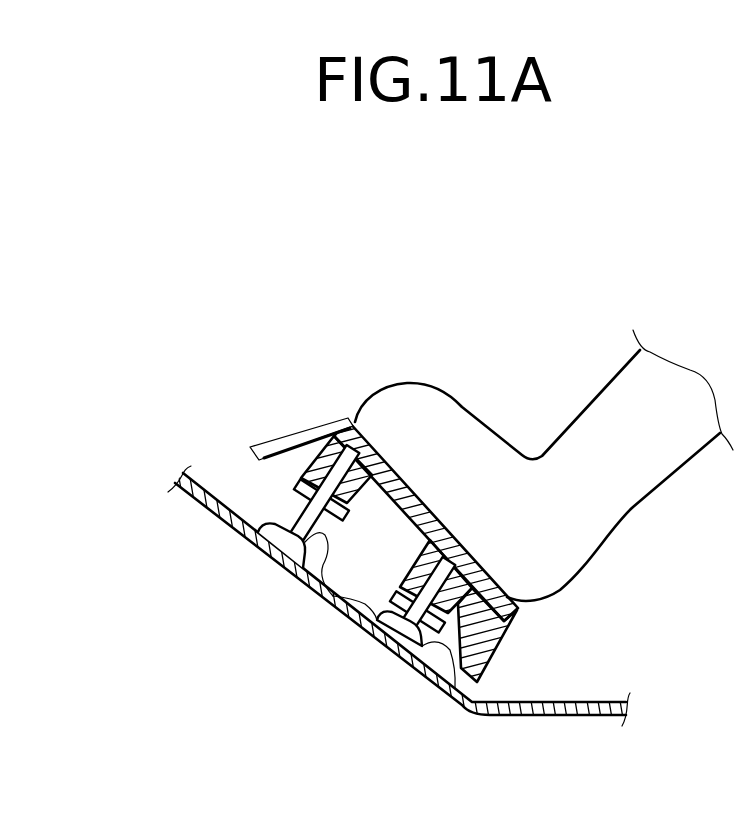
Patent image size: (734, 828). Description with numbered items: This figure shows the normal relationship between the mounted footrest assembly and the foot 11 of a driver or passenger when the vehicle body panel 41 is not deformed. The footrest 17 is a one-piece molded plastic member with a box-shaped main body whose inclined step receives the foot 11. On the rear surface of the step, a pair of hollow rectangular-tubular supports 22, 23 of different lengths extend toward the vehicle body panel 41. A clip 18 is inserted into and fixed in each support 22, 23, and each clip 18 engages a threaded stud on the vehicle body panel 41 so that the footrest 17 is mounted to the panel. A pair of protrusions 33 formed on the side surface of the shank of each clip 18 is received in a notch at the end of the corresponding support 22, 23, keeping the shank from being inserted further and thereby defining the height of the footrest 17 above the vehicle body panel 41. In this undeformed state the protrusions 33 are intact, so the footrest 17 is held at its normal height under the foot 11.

The foot 11 is at (470, 408).
The footrest 17 is at (303, 425).
The clip 18 is at (287, 512).
The support 22 is at (352, 492).
The support 23 is at (490, 650).
The protrusion 33 is at (296, 483).
The vehicle body panel 41 is at (221, 522).